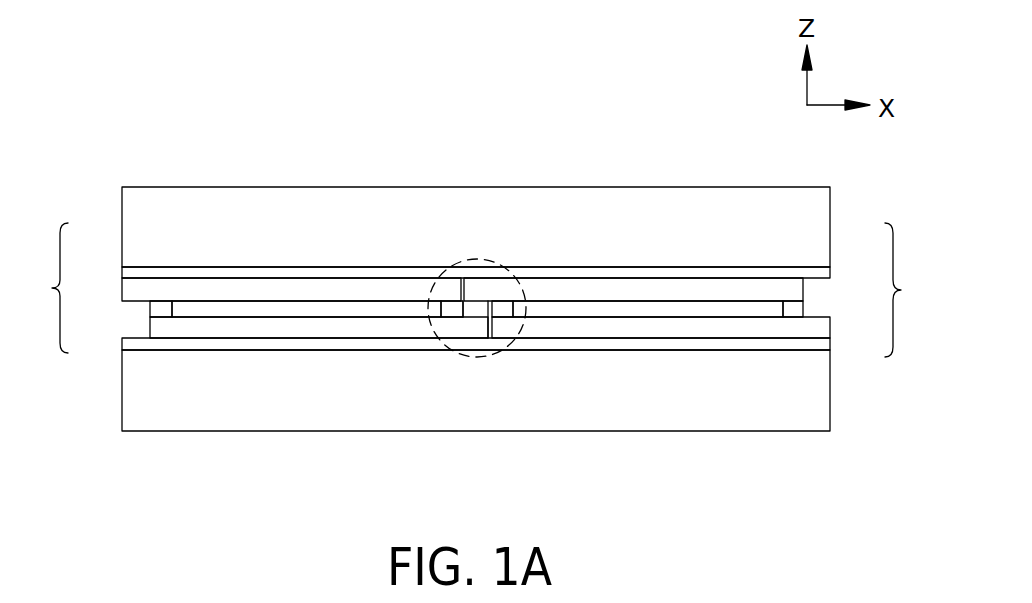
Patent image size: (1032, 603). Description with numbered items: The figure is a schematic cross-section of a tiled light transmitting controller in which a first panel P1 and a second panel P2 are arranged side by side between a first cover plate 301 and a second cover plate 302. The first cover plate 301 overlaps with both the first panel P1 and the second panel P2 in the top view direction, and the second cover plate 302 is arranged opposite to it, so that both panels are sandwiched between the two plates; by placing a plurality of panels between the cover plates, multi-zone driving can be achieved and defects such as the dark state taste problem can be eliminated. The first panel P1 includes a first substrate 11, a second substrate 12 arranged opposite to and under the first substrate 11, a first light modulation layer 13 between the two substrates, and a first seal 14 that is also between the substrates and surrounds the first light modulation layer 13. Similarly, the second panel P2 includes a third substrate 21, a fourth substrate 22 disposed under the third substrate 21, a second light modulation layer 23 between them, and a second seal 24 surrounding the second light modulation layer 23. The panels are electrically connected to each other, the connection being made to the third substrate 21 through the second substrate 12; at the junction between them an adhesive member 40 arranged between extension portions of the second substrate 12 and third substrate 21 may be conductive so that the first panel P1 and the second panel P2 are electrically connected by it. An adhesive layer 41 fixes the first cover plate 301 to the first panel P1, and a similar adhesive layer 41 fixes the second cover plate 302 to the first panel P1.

The first cover plate 301 is at (133, 203).
The second cover plate 302 is at (133, 393).
The adhesive layer 41 is at (292, 276).
The adhesive member 40 is at (477, 307).
The first substrate 11 is at (155, 287).
The second substrate 12 is at (153, 327).
The first light modulation layer 13 is at (197, 307).
The first seal 14 is at (150, 307).
The third substrate 21 is at (798, 287).
The fourth substrate 22 is at (822, 327).
The second light modulation layer 23 is at (757, 307).
The second seal 24 is at (798, 308).
The first panel P1 is at (43, 288).
The second panel P2 is at (909, 290).